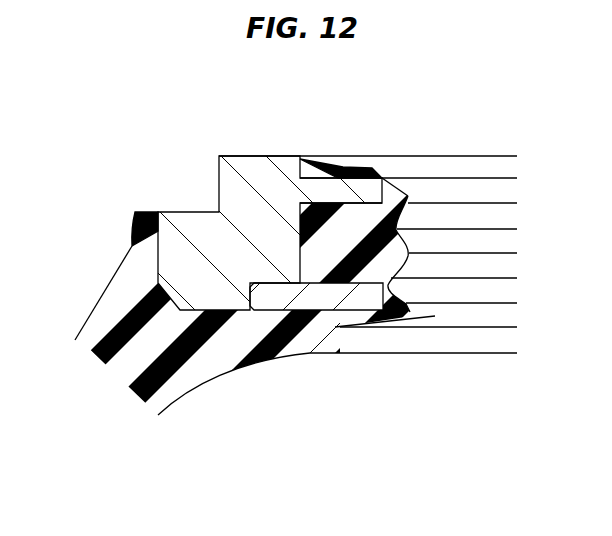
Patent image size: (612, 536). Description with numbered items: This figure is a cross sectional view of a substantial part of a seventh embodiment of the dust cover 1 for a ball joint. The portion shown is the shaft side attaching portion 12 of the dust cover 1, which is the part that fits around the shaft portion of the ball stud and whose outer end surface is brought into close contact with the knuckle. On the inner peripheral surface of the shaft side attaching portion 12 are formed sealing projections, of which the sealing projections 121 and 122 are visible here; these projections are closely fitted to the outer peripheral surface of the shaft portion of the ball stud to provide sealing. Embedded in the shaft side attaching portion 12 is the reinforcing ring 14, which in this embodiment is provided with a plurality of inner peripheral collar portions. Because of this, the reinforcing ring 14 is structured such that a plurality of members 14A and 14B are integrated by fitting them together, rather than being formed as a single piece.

The dust cover 1 is at (82, 280).
The shaft side attaching portion 12 is at (295, 365).
The sealing projection 121 is at (406, 194).
The sealing projection 122 is at (407, 249).
The reinforcing ring 14 is at (248, 247).
The member of reinforcing ring 14A is at (230, 190).
The member of reinforcing ring 14B is at (330, 298).